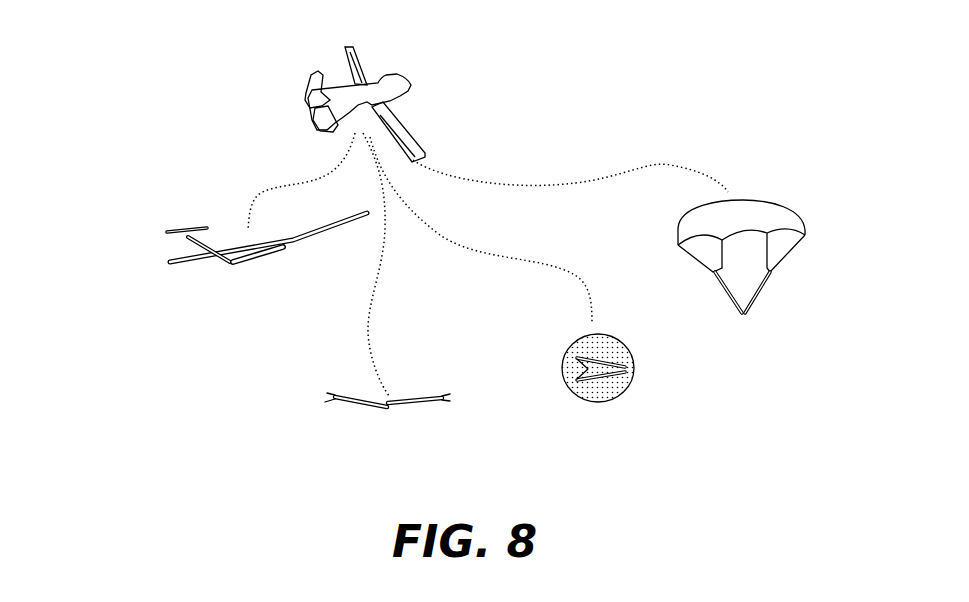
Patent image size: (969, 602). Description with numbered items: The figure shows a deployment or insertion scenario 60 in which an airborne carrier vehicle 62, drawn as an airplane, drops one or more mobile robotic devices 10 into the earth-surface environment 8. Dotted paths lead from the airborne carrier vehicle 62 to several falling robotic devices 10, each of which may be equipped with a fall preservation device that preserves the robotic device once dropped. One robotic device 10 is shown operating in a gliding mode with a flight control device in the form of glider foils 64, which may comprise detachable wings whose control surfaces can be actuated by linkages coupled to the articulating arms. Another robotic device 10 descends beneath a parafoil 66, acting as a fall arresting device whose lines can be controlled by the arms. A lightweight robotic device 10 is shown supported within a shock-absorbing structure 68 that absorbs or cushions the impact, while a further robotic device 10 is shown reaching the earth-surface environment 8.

The deployment or insertion scenario 60 is at (148, 68).
The airborne carrier vehicle 62 is at (410, 83).
The glider foils 64 is at (170, 261).
The parafoil 66 is at (773, 202).
The shock-absorbing structure 68 is at (628, 348).
The mobile robotic device 10 is at (270, 257).
The earth-surface environment 8 is at (292, 456).